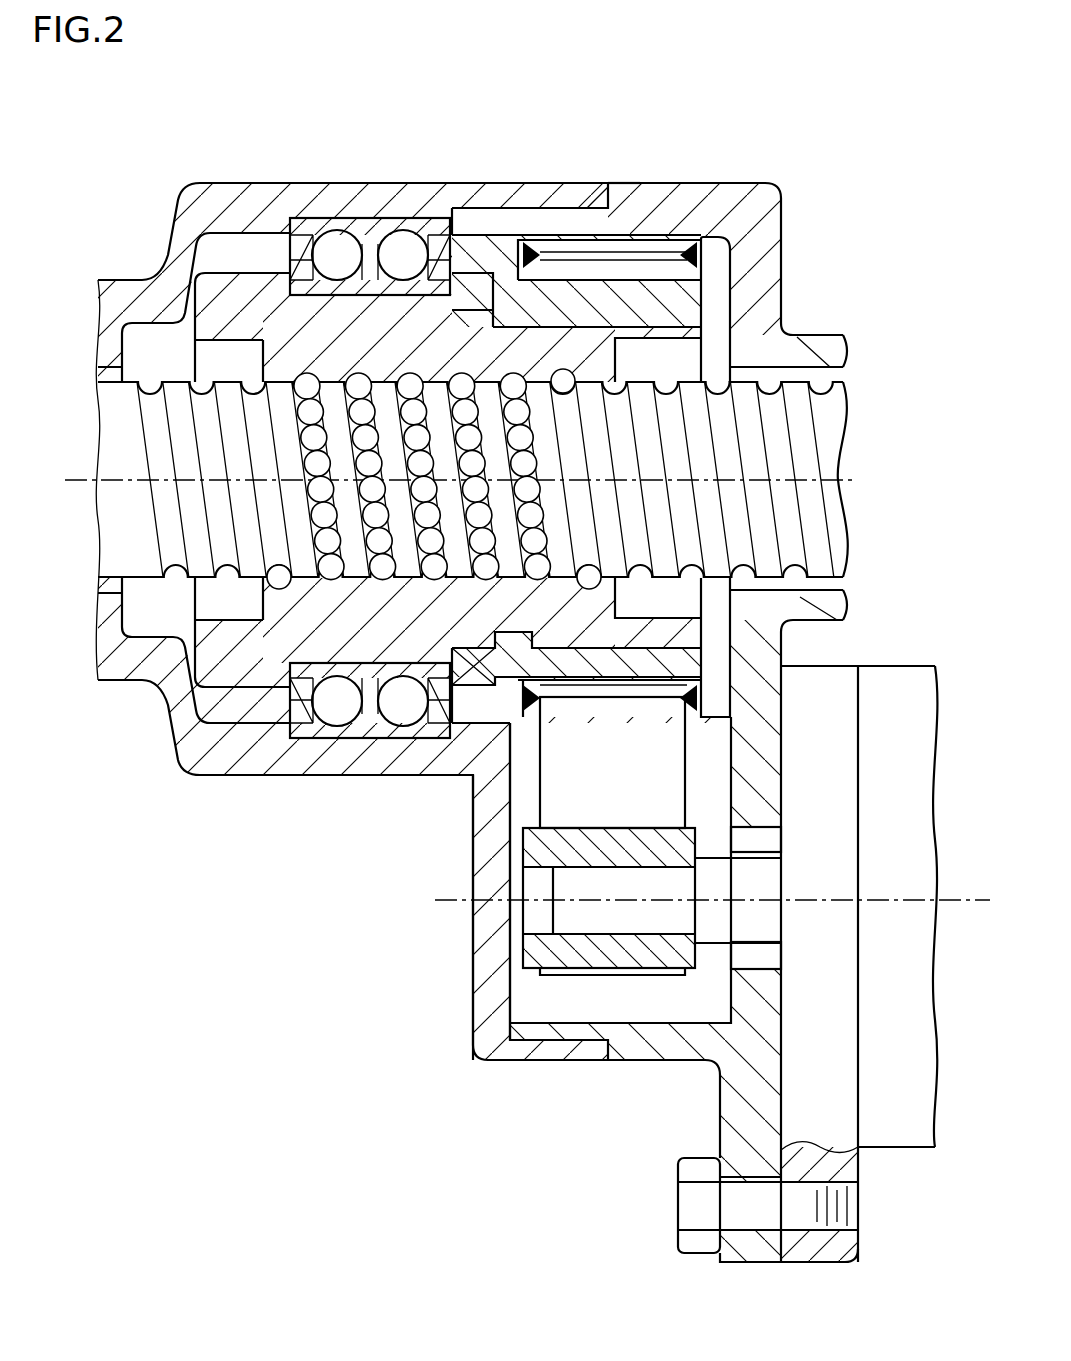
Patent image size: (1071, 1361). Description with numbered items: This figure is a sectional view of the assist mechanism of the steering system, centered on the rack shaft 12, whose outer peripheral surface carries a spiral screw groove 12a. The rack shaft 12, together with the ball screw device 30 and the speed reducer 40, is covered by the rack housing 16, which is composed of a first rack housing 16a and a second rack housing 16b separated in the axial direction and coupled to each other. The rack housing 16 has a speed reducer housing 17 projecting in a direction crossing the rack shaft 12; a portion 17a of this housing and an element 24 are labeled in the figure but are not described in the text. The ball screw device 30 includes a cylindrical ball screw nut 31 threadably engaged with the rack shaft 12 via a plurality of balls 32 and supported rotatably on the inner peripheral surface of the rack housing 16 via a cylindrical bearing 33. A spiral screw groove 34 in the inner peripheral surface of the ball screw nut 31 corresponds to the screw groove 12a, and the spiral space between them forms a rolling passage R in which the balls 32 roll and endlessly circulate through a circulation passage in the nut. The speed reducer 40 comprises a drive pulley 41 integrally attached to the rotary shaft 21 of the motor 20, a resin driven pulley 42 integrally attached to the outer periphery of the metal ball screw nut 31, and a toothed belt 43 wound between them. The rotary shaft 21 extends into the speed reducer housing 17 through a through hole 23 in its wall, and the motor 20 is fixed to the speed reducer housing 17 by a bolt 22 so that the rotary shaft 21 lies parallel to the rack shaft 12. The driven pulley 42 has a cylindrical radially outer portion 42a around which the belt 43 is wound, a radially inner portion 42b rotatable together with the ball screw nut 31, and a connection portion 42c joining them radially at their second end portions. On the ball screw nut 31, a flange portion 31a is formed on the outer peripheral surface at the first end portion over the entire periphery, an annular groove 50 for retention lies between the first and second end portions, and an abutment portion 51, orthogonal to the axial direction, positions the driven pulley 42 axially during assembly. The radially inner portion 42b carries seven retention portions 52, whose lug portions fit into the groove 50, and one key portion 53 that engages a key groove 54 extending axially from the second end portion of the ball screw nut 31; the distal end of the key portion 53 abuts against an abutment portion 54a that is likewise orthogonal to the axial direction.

The rack shaft 12 is at (100, 375).
The screw groove 12a is at (150, 440).
The rack housing 16 is at (650, 128).
The first rack housing 16a is at (562, 183).
The second rack housing 16b is at (632, 183).
The speed reducer housing 17 is at (472, 1066).
The mounting flange of bracket 17a is at (722, 1115).
The motor 20 is at (926, 1146).
The rotary shaft 21 is at (764, 945).
The bolt 22 is at (764, 828).
The through hole 23 is at (678, 1203).
The bolt 24 is at (803, 1255).
The ball screw device 30 is at (217, 690).
The ball screw nut 31 is at (177, 662).
The flange portion 31a is at (257, 683).
The balls 32 is at (410, 557).
The bearing 33 is at (363, 732).
The screw groove 34 is at (378, 530).
The rolling passage R is at (360, 530).
The speed reducer 40 is at (540, 768).
The drive pulley 41 is at (522, 960).
The belt 43 is at (540, 813).
The driven pulley 42 is at (470, 262).
The radially outer portion 42a is at (643, 270).
The radially inner portion 42b is at (627, 308).
The connection portion 42c is at (688, 282).
The groove 50 is at (497, 648).
The abutment portion 51 is at (438, 210).
The retention portions 52 is at (565, 644).
The key portion 53 is at (540, 297).
The key groove 54 is at (733, 316).
The abutment portion 54a is at (512, 274).